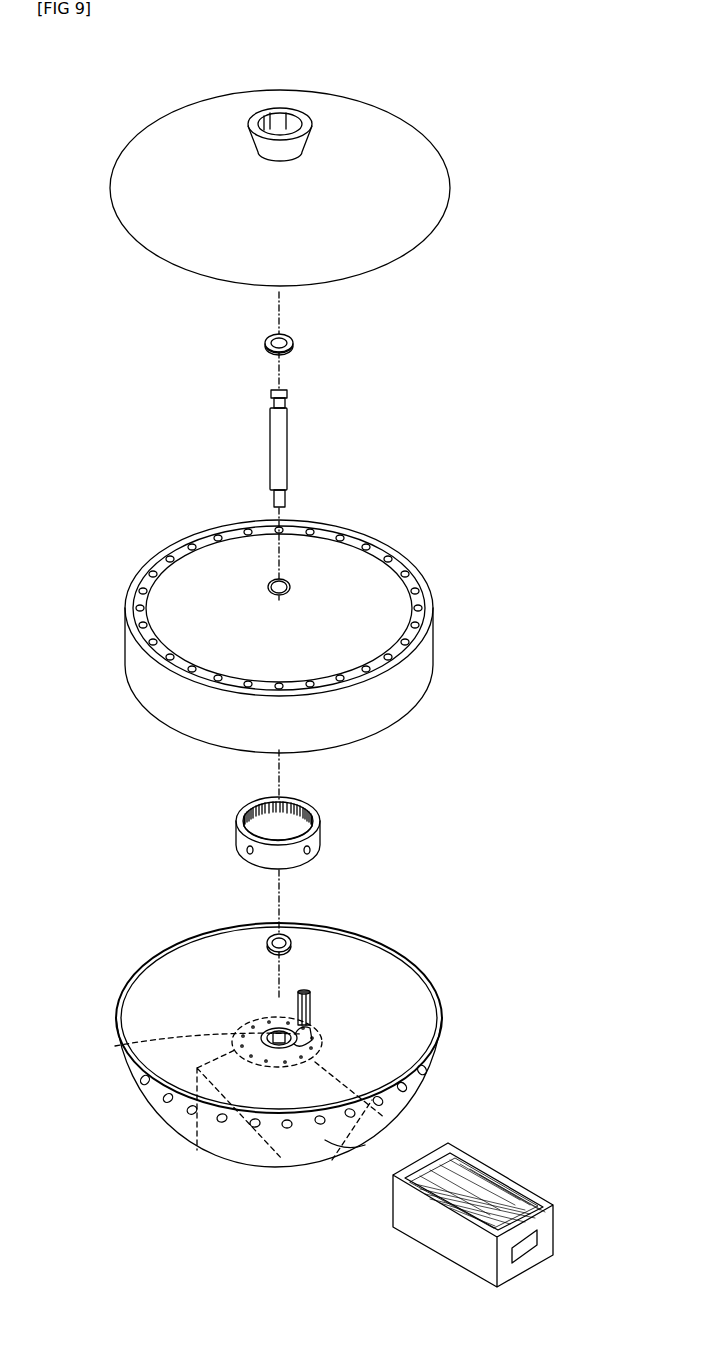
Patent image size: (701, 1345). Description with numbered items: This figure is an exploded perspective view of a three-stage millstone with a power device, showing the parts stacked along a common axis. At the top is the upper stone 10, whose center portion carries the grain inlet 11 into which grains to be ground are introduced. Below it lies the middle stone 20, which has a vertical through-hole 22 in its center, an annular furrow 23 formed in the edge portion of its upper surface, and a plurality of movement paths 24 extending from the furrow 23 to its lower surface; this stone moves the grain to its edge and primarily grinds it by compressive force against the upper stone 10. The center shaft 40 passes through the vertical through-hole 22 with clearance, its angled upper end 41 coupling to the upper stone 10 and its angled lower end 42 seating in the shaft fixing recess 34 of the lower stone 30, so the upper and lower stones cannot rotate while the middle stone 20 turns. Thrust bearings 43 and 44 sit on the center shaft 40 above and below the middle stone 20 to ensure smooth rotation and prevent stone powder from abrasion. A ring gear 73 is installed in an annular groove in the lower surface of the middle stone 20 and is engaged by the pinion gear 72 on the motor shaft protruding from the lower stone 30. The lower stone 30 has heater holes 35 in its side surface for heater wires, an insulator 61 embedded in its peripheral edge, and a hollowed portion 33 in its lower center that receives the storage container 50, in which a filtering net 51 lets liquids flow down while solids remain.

The upper stone 10 is at (372, 122).
The grain inlet 11 is at (285, 115).
The middle stone 20 is at (250, 621).
The vertical through-hole 22 is at (268, 583).
The annular furrow 23 is at (378, 556).
The movement paths 24 is at (322, 530).
The lower stone 30 is at (283, 1040).
The hollowed portion 33 is at (270, 1166).
The shaft fixing recess 34 is at (122, 1040).
The heater holes 35 is at (352, 1120).
The center shaft 40 is at (253, 446).
The upper end 41 is at (268, 402).
The lower end 42 is at (272, 500).
The thrust bearing 43 is at (295, 343).
The thrust bearing 44 is at (292, 938).
The storage container 50 is at (499, 1210).
The filtering net 51 is at (497, 1173).
The insulator 61 is at (153, 962).
The pinion gear 72 is at (400, 993).
The ring gear 73 is at (322, 840).